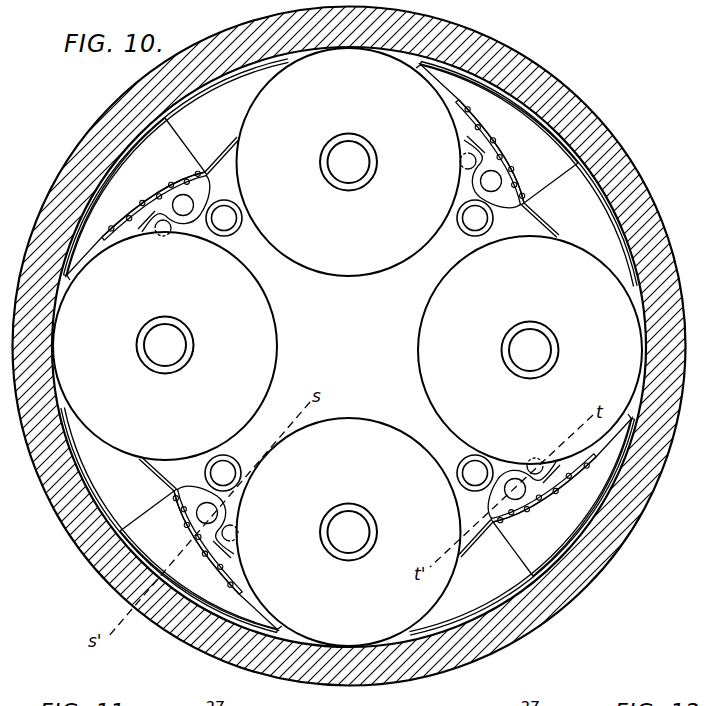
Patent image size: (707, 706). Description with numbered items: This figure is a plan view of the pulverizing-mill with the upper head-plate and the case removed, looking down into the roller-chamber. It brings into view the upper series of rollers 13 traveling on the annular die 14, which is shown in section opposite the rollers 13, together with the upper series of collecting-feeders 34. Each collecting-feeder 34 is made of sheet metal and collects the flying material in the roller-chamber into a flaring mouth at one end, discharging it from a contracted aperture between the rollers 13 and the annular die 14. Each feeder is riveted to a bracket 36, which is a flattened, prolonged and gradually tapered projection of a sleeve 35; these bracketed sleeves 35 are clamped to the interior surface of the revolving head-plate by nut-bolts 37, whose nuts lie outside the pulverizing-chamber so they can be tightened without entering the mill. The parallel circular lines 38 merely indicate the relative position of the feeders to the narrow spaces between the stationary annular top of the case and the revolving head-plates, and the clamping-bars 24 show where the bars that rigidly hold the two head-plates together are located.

The roller 13 is at (347, 347).
The annular die 14 is at (349, 346).
The clamping-bar 24 is at (470, 465).
The collecting-feeder 34 is at (349, 347).
The sleeve 35 is at (222, 513).
The bracket 36 is at (553, 497).
The nut-bolt 37 is at (540, 459).
The parallel circular lines 38 is at (470, 560).